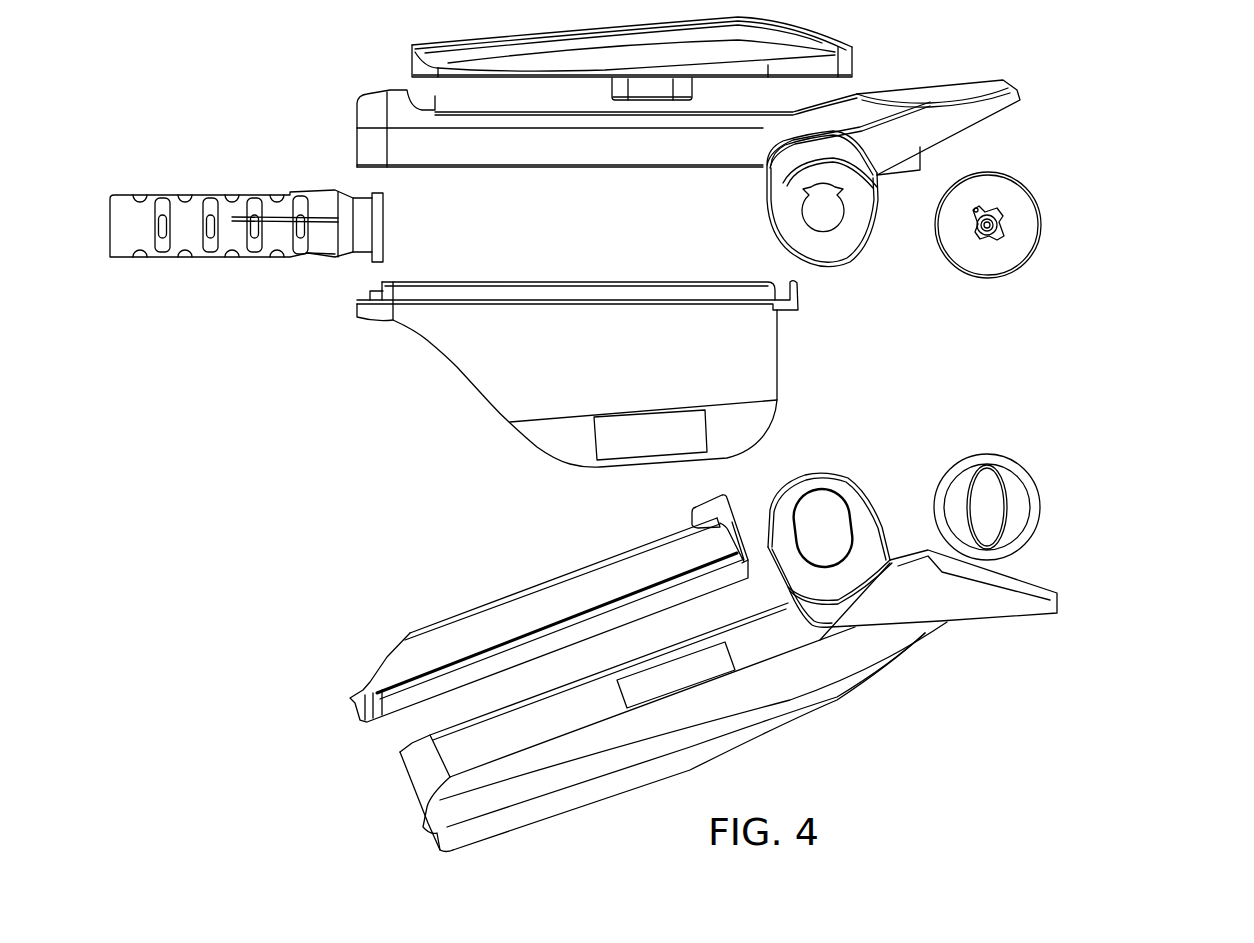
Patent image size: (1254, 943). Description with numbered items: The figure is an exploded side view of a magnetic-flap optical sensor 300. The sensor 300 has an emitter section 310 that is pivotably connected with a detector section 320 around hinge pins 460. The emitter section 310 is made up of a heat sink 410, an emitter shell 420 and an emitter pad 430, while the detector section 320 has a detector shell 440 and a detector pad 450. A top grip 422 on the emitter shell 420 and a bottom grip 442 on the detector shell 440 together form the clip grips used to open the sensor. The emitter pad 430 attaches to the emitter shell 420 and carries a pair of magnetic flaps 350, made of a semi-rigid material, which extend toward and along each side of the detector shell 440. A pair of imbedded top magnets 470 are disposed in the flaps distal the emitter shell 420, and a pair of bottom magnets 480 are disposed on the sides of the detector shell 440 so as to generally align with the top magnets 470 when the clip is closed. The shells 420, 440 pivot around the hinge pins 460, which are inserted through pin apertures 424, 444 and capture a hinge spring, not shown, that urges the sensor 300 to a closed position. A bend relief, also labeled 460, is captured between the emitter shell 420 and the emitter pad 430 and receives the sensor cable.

The sensor 300 is at (1150, 52).
The emitter section 310 is at (354, 60).
The detector section 320 is at (360, 807).
The magnetic flaps 350 is at (765, 355).
The heat sink 410 is at (837, 57).
The emitter shell 420 is at (867, 100).
The top grip 422 is at (1000, 90).
The pin aperture 424 is at (830, 227).
The emitter pad 430 is at (627, 292).
The detector shell 440 is at (837, 687).
The bottom grip 442 is at (1045, 605).
The pin aperture 444 is at (827, 502).
The detector pad 450 is at (517, 603).
The hinge pins 460 is at (212, 192).
The top magnets 470 is at (607, 447).
The bottom magnets 480 is at (703, 658).